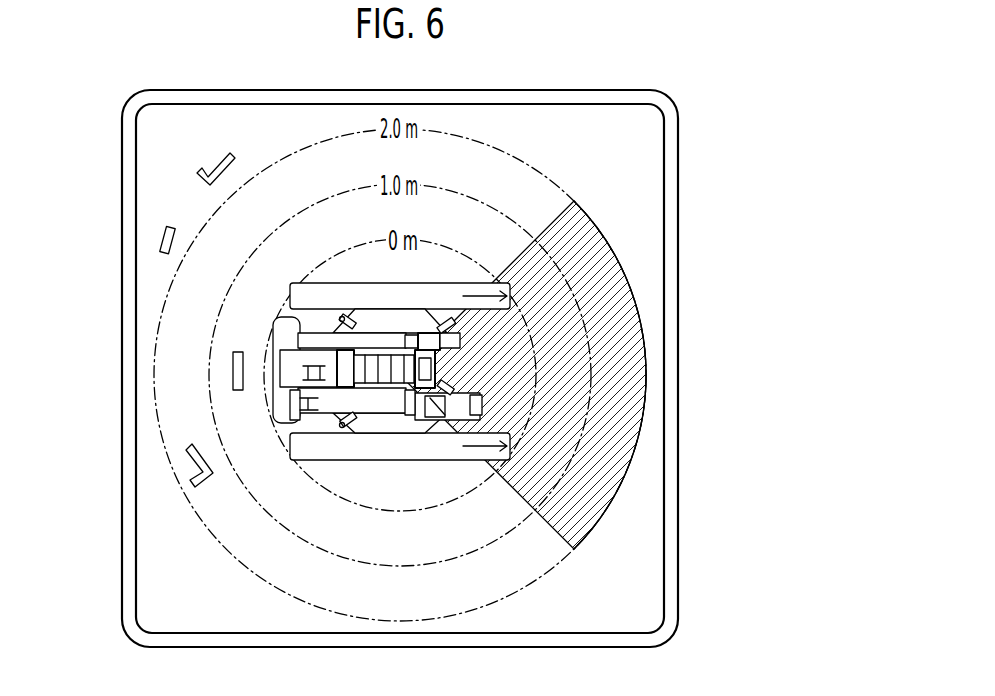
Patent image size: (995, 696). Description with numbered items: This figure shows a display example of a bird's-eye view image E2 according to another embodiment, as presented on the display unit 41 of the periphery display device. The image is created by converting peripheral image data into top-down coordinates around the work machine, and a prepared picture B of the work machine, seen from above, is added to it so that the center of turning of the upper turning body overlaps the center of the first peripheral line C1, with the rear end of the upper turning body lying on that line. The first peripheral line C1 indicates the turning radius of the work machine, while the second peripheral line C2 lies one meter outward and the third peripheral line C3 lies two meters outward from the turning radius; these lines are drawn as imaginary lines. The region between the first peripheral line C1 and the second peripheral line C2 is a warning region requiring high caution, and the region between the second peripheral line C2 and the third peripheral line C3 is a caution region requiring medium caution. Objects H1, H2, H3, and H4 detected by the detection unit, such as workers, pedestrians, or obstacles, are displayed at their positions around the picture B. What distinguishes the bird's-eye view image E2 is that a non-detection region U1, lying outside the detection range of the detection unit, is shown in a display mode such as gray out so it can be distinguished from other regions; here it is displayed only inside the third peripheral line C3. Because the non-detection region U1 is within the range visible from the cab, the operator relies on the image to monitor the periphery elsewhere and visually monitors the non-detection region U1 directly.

The display unit 41 is at (161, 91).
The bird's-eye view image E2 is at (270, 124).
The picture of the work machine B is at (405, 273).
The object H1 is at (232, 373).
The object H2 is at (190, 477).
The object H3 is at (160, 240).
The object H4 is at (197, 170).
The non-detection region U1 is at (622, 310).
The first peripheral line C1 is at (312, 480).
The second peripheral line C2 is at (440, 563).
The third peripheral line C3 is at (540, 580).